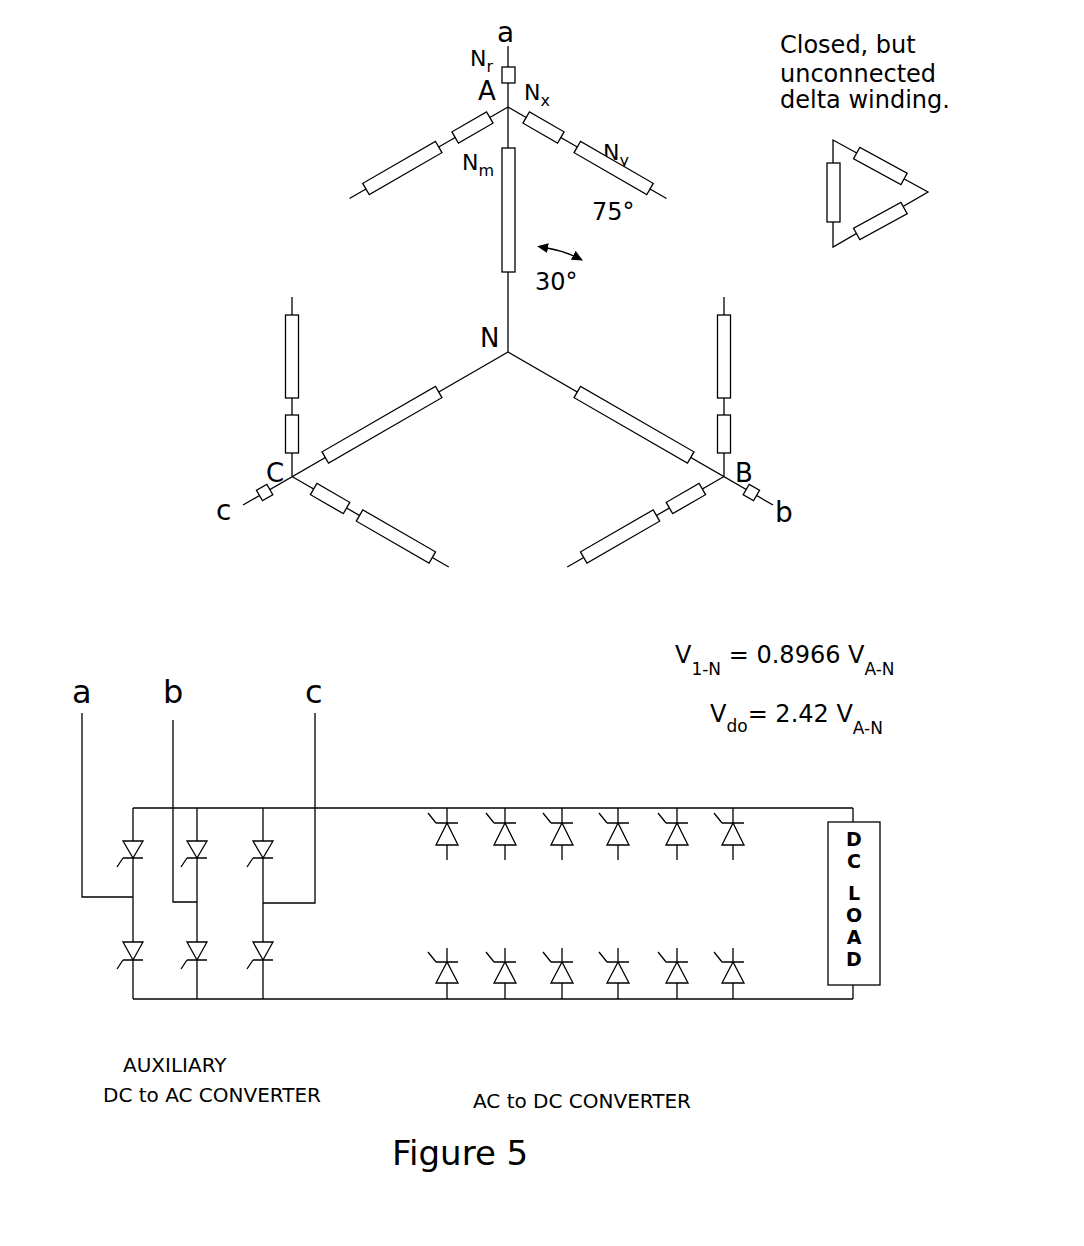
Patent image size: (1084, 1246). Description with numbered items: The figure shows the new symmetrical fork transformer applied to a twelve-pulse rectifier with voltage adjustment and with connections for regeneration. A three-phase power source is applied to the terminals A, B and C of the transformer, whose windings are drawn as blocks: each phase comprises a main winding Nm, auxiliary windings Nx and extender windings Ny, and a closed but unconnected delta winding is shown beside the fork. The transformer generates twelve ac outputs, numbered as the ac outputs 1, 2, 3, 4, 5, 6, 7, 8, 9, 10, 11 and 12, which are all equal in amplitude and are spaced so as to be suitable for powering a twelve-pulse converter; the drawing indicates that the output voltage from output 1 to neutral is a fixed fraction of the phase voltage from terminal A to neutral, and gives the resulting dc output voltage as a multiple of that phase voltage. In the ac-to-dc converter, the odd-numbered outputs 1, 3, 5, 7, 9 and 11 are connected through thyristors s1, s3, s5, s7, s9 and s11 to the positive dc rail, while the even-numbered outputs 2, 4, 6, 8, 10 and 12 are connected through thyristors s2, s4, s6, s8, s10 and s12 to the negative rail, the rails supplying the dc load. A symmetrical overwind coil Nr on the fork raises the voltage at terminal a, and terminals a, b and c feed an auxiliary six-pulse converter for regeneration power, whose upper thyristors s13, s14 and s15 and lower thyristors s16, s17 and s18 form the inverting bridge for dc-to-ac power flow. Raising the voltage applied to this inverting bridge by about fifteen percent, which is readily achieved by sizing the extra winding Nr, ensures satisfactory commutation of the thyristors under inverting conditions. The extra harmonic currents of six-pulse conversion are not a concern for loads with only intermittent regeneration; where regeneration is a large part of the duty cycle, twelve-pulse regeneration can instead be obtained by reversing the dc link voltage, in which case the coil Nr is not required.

The ac output 1 is at (508, 352).
The ac output 2 is at (508, 352).
The ac output 3 is at (508, 352).
The ac output 4 is at (508, 352).
The ac output 5 is at (508, 352).
The ac output 6 is at (508, 352).
The ac output 7 is at (508, 352).
The ac output 8 is at (508, 352).
The ac output 9 is at (508, 352).
The ac output 10 is at (508, 352).
The ac output 11 is at (508, 352).
The ac output 12 is at (508, 352).
The thyristor switch s1 is at (417, 830).
The thyristor switch s2 is at (465, 974).
The thyristor switch s3 is at (477, 834).
The thyristor switch s4 is at (525, 974).
The thyristor switch s5 is at (533, 834).
The thyristor switch s6 is at (582, 974).
The thyristor switch s7 is at (593, 832).
The thyristor switch s8 is at (640, 974).
The thyristor switch s9 is at (648, 834).
The thyristor switch s10 is at (700, 974).
The thyristor switch s11 is at (706, 828).
The thyristor switch s12 is at (758, 968).
The auxiliary converter thyristor s13 is at (109, 834).
The auxiliary converter thyristor s14 is at (181, 834).
The auxiliary converter thyristor s15 is at (243, 836).
The auxiliary converter thyristor s16 is at (158, 960).
The auxiliary converter thyristor s17 is at (222, 960).
The auxiliary converter thyristor s18 is at (297, 960).